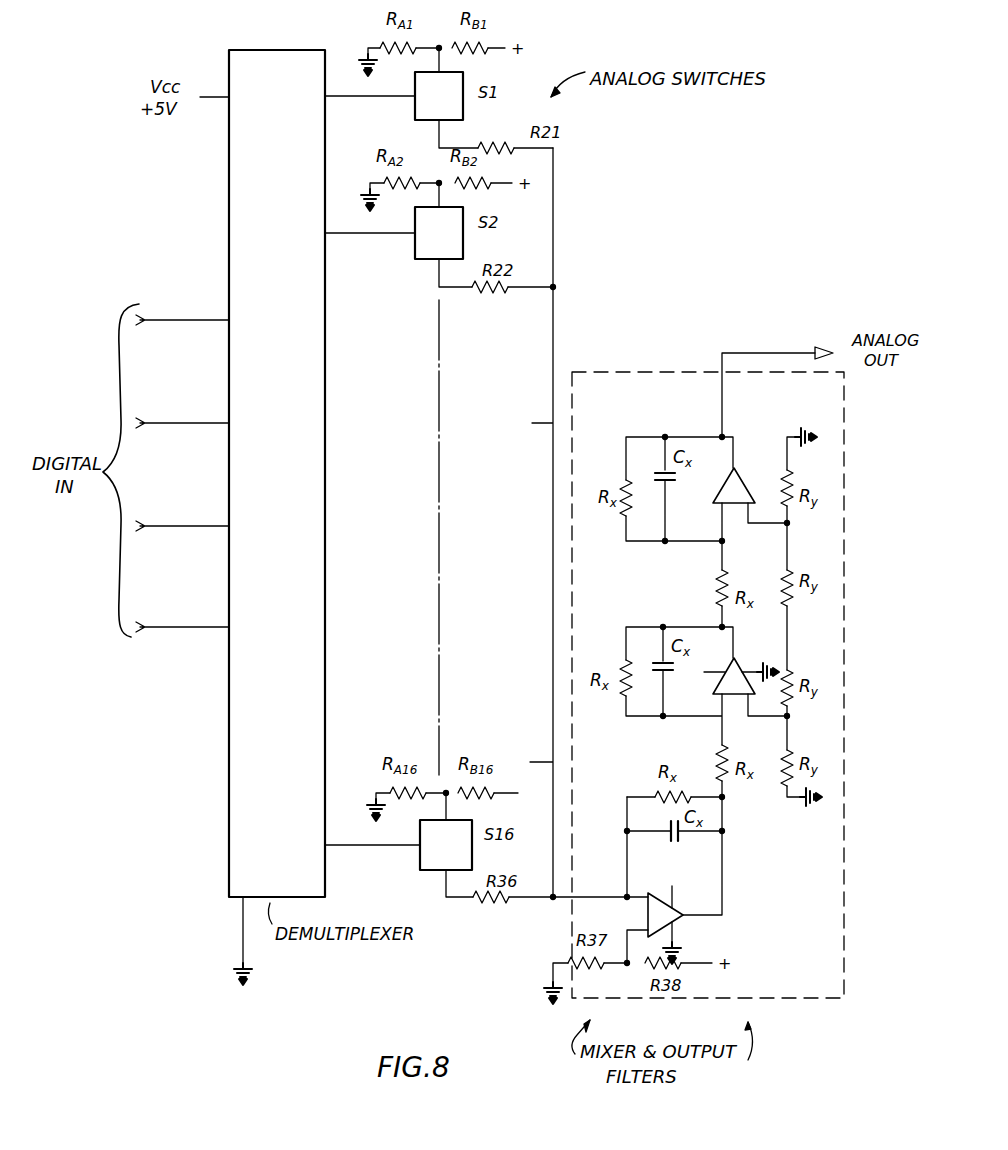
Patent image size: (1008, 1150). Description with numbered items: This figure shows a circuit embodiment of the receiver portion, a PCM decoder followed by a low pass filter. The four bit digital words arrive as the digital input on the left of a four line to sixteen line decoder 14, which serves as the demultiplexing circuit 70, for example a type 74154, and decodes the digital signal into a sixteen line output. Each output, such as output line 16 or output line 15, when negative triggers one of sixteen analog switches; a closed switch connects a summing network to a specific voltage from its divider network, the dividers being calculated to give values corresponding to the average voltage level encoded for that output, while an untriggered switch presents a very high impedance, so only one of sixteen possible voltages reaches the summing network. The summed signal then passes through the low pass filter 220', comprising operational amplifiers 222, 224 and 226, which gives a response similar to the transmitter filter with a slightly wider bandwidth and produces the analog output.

The 4 line to 16 line decoder 14 is at (302, 473).
The demultiplexing circuit 70 is at (300, 481).
The decoder output line 16 is at (370, 107).
The decoder output line 15 is at (370, 244).
The low pass filter 220' is at (736, 685).
The operational amplifier 222 is at (727, 508).
The operational amplifier 224 is at (727, 699).
The operational amplifier 226 is at (655, 892).